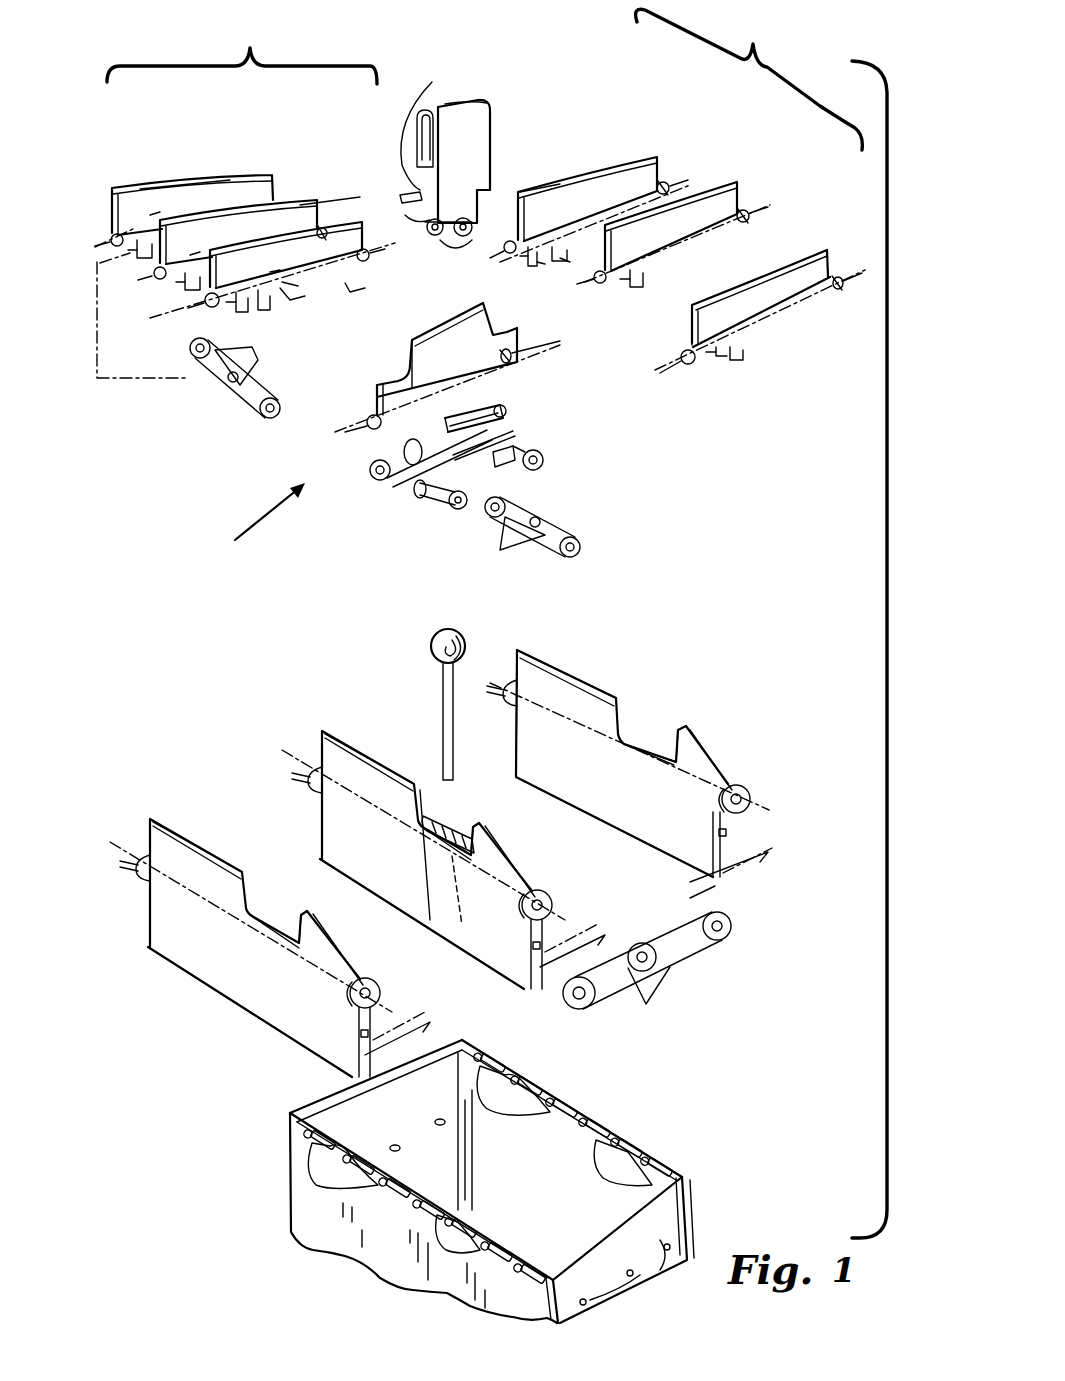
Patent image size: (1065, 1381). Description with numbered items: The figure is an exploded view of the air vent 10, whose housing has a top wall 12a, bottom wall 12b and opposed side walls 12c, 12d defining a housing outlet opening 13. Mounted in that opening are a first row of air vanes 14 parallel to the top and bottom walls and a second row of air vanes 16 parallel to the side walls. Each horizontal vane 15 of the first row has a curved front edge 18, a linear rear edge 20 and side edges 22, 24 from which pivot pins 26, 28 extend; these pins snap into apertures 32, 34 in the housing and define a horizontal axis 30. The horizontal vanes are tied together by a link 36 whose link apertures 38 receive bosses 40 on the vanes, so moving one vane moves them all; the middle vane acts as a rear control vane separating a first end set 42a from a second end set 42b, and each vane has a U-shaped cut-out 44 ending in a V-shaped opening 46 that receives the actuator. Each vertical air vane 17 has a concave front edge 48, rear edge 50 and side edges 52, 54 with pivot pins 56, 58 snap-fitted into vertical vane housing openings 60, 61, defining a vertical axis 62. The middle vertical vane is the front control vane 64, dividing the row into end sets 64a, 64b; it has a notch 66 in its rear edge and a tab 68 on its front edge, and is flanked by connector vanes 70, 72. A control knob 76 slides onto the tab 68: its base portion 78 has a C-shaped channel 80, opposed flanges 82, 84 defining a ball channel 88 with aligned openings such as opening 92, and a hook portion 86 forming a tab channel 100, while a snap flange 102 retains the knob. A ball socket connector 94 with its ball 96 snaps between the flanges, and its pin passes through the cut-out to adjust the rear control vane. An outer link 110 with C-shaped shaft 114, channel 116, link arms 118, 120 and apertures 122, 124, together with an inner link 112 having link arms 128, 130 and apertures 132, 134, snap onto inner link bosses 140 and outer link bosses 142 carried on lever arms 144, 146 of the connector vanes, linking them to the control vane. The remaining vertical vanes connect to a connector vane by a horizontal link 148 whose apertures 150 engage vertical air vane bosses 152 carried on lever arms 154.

The air vent 10 is at (505, 20).
The top wall 12a is at (655, 1160).
The bottom wall 12b is at (387, 1237).
The side wall 12c is at (290, 1114).
The side wall 12d is at (692, 1217).
The housing outlet opening 13 is at (628, 1120).
The first row of air vanes 14 is at (208, 708).
The horizontal vane 15 is at (519, 642).
The second row of air vanes 16 is at (258, 525).
The vertical air vane 17 is at (253, 168).
The front edge 18 is at (556, 670).
The rear edge 20 is at (598, 830).
The side edge 22 is at (516, 742).
The side edge 24 is at (752, 851).
The pivot pin 26 is at (505, 684).
The pivot pin 28 is at (751, 794).
The horizontal axis 30 is at (552, 713).
The aperture 32 is at (435, 1123).
The aperture 34 is at (620, 1283).
The link 36 is at (583, 1010).
The link aperture 38 is at (650, 1003).
The boss 40 is at (711, 837).
The first end set 42a is at (191, 995).
The second end set 42b is at (732, 734).
The U-shaped cut-out 44 is at (658, 718).
The V-shaped opening 46 is at (466, 832).
The front edge 48 is at (218, 183).
The rear edge 50 is at (160, 233).
The side edge 52 is at (112, 210).
The side edge 54 is at (322, 228).
The pivot pin 56 is at (512, 255).
The pivot pin 58 is at (323, 228).
The vertical vane housing opening 60 is at (330, 1185).
The vertical vane housing opening 61 is at (505, 1120).
The vertical axis 62 is at (150, 197).
The front control vane 64 is at (434, 316).
The first end set 64a is at (242, 48).
The second end set 64b is at (749, 79).
The notch 66 is at (110, 240).
The tab 68 is at (408, 345).
The connector vane 70 is at (403, 216).
The connector vane 72 is at (639, 156).
The control knob 76 is at (493, 100).
The base portion 78 is at (492, 188).
The C-shaped channel 80 is at (404, 189).
The flange 82 is at (436, 237).
The flange 84 is at (473, 233).
The hook portion 86 is at (438, 110).
The ball channel 88 is at (464, 245).
The opening 92 is at (450, 212).
The ball socket connector 94 is at (436, 642).
The ball 96 is at (458, 634).
The tab channel 100 is at (480, 101).
The snap flange 102 is at (424, 127).
The outer link 110 is at (410, 496).
The inner link 112 is at (447, 424).
The C-shaped shaft 114 is at (500, 442).
The channel 116 is at (424, 499).
The link arm 118 is at (463, 511).
The link arm 120 is at (517, 450).
The link aperture 122 is at (470, 493).
The link aperture 124 is at (542, 467).
The link arm 128 is at (410, 467).
The link arm 130 is at (507, 421).
The link aperture 132 is at (379, 481).
The link aperture 134 is at (506, 410).
The inner link boss 140 is at (298, 308).
The outer link boss 142 is at (539, 269).
The lever arm 144 is at (282, 291).
The lever arm 146 is at (563, 268).
The horizontal link 148 is at (256, 409).
The aperture 150 is at (256, 360).
The vertical air vane boss 152 is at (142, 256).
The lever arm 154 is at (135, 254).